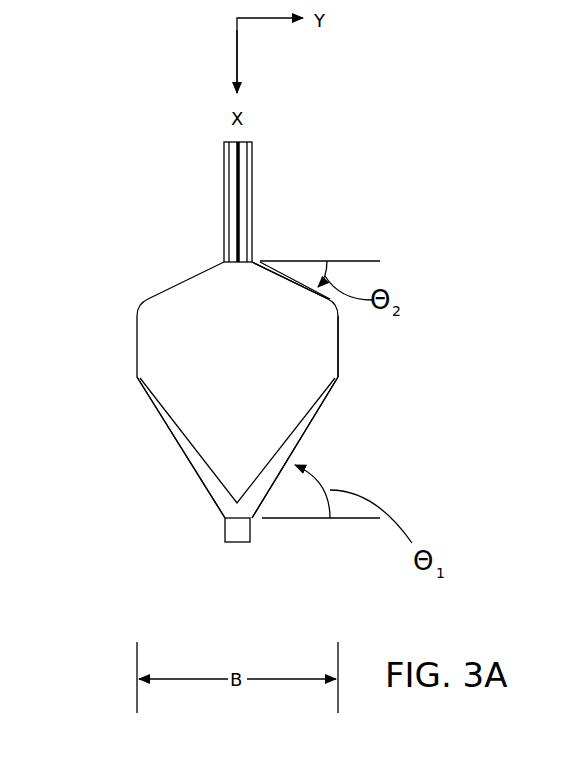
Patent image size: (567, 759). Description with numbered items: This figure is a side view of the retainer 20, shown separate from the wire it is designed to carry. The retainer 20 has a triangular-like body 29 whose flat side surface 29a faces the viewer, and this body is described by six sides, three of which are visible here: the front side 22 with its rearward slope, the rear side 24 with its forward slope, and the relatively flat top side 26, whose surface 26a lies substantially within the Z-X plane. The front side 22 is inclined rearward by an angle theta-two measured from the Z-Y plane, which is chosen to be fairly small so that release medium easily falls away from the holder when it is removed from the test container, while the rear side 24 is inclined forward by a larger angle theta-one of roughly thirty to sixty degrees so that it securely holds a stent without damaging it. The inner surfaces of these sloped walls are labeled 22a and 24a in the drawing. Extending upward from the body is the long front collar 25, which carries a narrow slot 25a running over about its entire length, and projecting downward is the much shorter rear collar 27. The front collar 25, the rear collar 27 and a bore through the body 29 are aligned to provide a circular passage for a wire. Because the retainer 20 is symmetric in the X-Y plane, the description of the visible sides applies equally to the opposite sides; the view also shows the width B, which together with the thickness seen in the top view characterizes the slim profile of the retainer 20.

The retainer 20 is at (147, 98).
The front side 22 is at (272, 253).
The upper wall inner surface 22a is at (286, 279).
The rear side 24 is at (280, 496).
The conical wall inner surface 24a is at (316, 421).
The front collar 25 is at (204, 168).
The narrow slot 25a is at (238, 202).
The flat side 26 is at (413, 339).
The surface of top side 26a is at (338, 352).
The rear collar 27 is at (222, 530).
The triangular-like body 29 is at (112, 406).
The flat side surface 29a is at (240, 375).